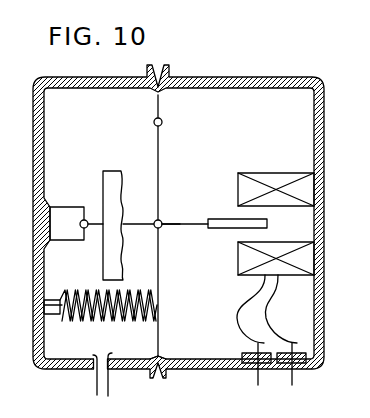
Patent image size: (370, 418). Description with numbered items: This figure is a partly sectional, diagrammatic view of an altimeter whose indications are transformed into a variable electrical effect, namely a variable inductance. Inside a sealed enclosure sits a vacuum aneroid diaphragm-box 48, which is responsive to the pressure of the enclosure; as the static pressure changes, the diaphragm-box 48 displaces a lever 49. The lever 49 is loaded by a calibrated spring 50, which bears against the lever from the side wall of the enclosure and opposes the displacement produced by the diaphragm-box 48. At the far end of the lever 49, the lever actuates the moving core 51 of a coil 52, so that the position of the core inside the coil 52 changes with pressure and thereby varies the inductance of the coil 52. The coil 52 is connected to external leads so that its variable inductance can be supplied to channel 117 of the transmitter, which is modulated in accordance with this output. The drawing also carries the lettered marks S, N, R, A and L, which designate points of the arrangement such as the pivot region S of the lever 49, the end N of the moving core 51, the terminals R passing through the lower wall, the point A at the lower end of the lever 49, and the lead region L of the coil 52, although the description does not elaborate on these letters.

The vacuum aneroid diaphragm-box 48 is at (111, 171).
The lever 49 is at (159, 163).
The calibrated spring 50 is at (100, 320).
The moving core 51 is at (214, 211).
The coil 52 is at (265, 180).
The channel 117 is at (274, 380).
The junction S is at (168, 239).
The contact N is at (185, 211).
The terminals R is at (112, 363).
The point A is at (167, 345).
The coil leads L is at (272, 309).